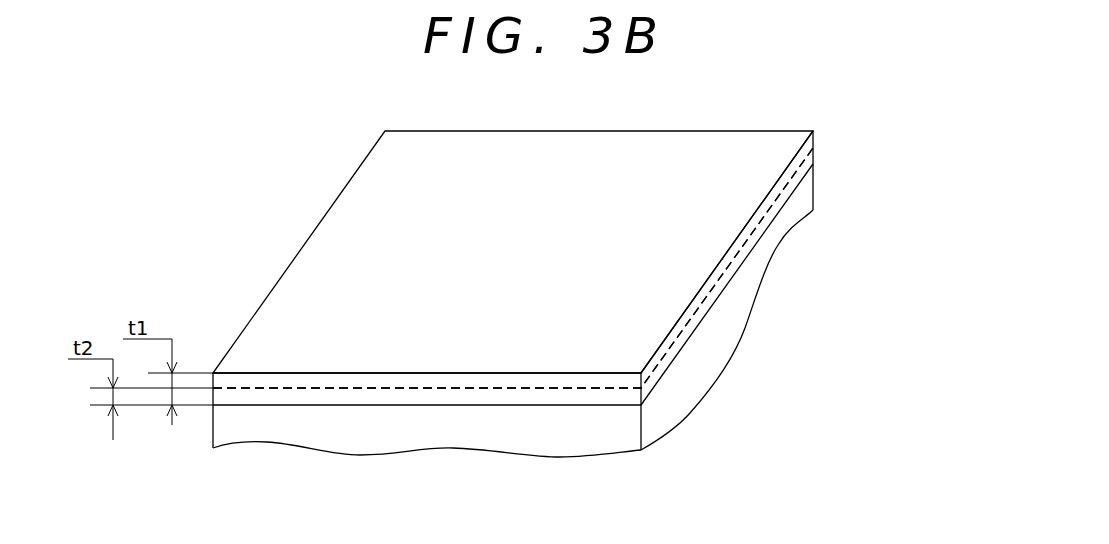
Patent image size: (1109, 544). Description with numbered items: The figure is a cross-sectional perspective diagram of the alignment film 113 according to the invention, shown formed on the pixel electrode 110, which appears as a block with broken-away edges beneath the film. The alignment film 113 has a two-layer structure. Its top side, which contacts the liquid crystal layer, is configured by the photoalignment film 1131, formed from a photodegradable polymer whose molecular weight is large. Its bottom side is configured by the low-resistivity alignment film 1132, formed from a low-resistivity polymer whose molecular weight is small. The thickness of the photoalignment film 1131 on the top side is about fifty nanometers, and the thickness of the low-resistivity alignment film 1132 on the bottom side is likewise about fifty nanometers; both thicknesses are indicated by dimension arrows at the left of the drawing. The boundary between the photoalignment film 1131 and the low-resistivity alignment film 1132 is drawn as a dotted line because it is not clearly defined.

The pixel electrode 110 is at (727, 325).
The alignment film 113 is at (598, 252).
The photoalignment film 1131 is at (813, 137).
The low-resistivity alignment film 1132 is at (813, 158).